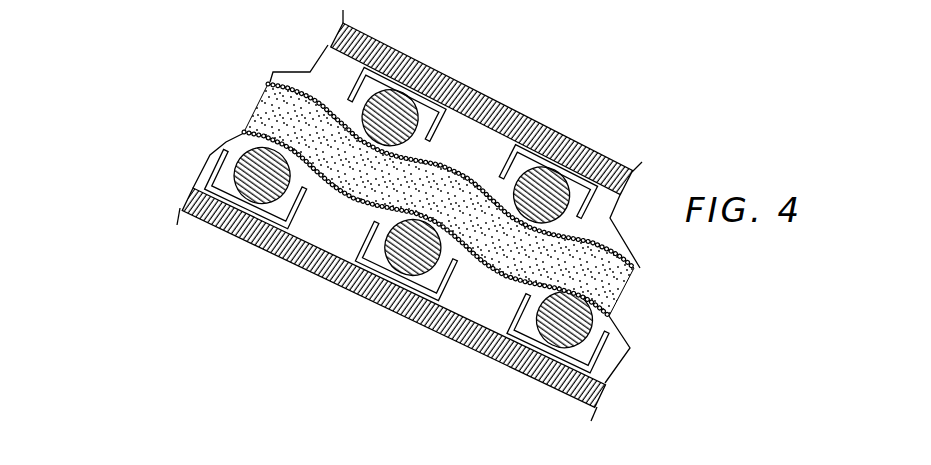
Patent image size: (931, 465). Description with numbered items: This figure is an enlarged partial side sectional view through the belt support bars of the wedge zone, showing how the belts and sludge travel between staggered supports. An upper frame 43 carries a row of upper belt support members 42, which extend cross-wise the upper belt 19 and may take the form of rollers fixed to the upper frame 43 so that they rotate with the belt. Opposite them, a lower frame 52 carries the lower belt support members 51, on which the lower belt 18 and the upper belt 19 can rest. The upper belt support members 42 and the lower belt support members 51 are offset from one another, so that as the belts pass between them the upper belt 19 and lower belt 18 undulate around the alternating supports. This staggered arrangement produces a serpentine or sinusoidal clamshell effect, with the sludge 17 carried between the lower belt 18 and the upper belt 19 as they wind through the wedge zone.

The sludge 17 is at (322, 115).
The lower belt 18 is at (222, 150).
The upper belt 19 is at (285, 80).
The upper belt support member 42 is at (400, 92).
The upper frame 43 is at (487, 97).
The lower belt support member 51 is at (402, 258).
The lower frame 52 is at (480, 341).